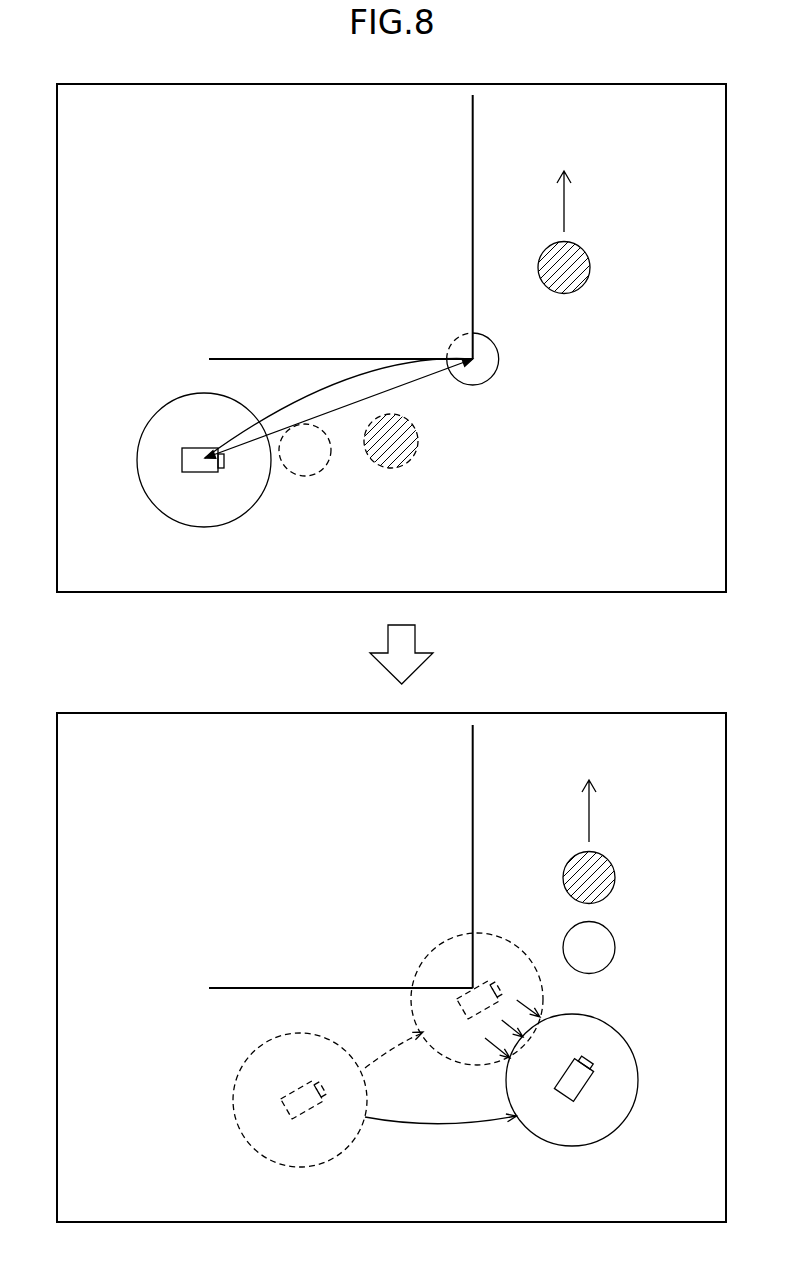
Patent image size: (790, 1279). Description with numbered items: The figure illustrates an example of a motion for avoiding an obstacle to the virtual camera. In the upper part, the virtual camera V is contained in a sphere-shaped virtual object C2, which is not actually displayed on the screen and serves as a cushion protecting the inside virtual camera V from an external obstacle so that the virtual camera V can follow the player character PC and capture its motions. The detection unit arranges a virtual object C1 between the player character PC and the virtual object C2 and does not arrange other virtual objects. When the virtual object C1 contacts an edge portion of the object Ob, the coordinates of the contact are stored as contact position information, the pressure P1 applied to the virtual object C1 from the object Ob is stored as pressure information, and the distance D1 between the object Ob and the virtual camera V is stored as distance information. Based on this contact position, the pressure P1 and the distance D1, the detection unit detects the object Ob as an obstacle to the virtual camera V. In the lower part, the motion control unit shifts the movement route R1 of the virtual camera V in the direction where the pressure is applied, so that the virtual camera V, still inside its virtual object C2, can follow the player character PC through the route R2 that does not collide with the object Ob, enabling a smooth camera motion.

The object Ob is at (473, 124).
The player character PC is at (583, 249).
The pressure P1 is at (470, 356).
The virtual object C1 is at (472, 385).
The virtual object C2 is at (158, 413).
The virtual camera V is at (199, 472).
The distance D1 is at (339, 409).
The movement route R1 is at (380, 1053).
The route R2 is at (438, 1125).